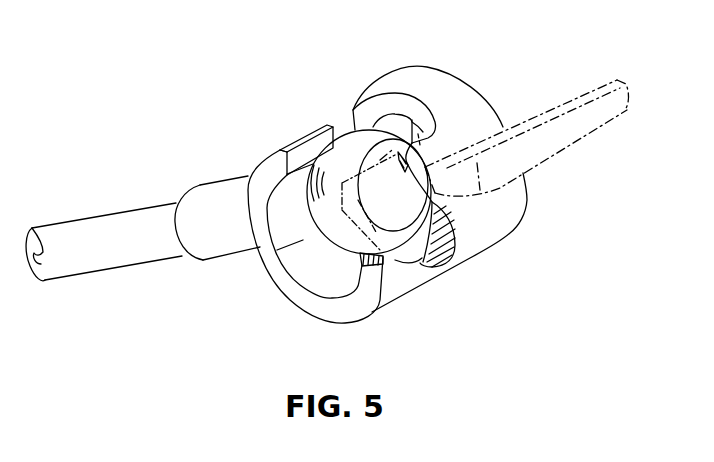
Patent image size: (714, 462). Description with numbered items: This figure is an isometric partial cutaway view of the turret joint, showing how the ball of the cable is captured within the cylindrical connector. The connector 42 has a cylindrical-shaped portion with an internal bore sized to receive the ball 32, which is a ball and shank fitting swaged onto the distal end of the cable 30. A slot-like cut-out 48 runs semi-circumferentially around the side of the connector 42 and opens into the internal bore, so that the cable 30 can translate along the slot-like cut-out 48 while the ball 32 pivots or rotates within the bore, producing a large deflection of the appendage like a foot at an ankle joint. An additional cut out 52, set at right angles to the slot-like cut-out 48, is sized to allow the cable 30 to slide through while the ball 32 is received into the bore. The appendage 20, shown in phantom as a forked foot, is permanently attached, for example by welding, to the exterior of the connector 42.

The appendage 20 is at (552, 104).
The cable 30 is at (68, 226).
The ball 32 is at (322, 218).
The connector 42 is at (403, 80).
The slot-like cut-out 48 is at (372, 109).
The cut out 52 is at (309, 140).